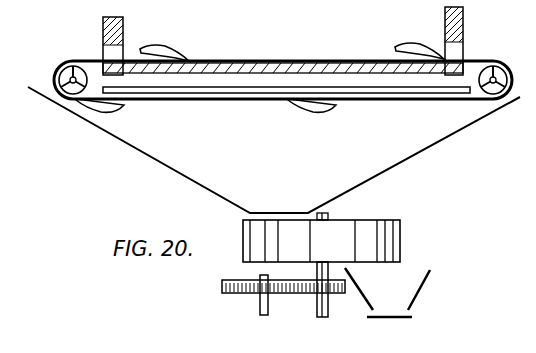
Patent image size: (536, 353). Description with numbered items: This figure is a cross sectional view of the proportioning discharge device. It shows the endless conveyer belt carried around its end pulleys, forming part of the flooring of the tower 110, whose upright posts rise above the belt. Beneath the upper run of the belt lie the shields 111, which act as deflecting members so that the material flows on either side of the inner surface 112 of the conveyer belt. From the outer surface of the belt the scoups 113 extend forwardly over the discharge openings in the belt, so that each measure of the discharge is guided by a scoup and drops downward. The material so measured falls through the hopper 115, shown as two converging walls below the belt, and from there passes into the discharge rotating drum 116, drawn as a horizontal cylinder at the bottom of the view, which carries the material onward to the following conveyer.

The tower 110 is at (463, 25).
The shield 111 is at (370, 87).
The inner surface of the conveyer belt 112 is at (172, 95).
The scoup 113 is at (168, 42).
The hopper 115 is at (418, 152).
The discharge rotating drum 116 is at (383, 233).